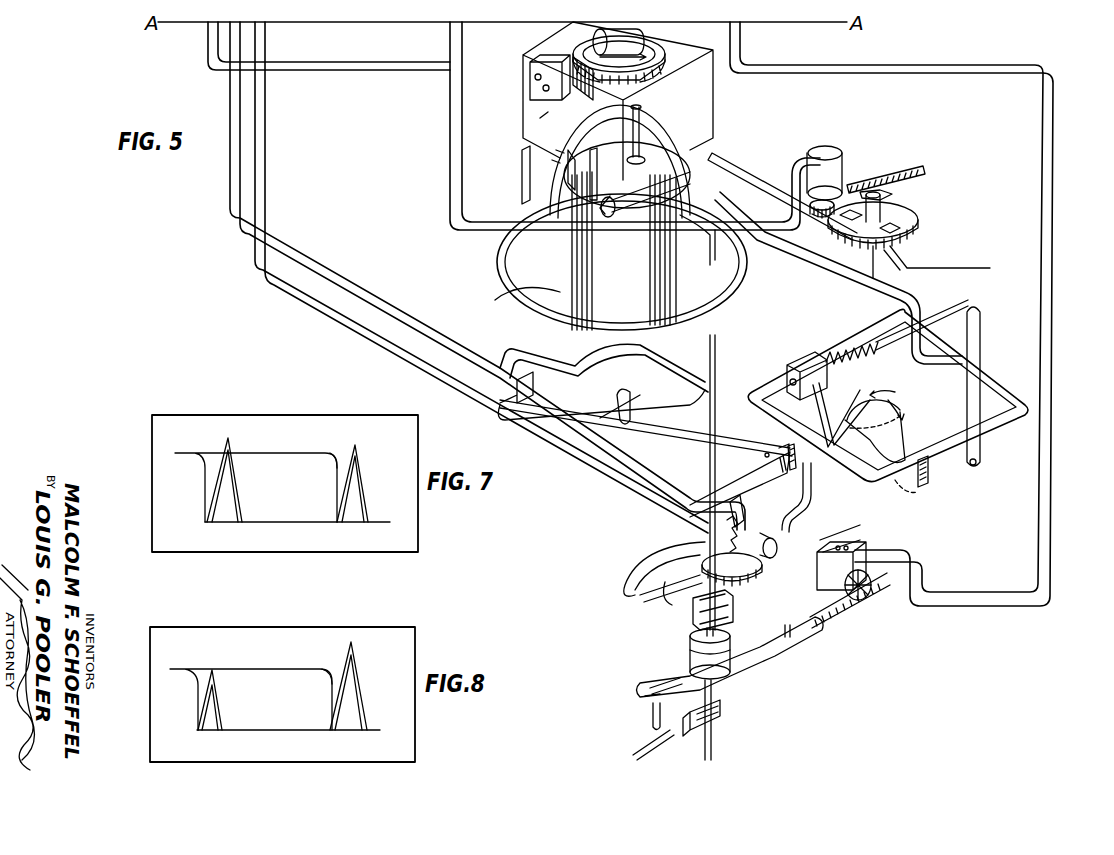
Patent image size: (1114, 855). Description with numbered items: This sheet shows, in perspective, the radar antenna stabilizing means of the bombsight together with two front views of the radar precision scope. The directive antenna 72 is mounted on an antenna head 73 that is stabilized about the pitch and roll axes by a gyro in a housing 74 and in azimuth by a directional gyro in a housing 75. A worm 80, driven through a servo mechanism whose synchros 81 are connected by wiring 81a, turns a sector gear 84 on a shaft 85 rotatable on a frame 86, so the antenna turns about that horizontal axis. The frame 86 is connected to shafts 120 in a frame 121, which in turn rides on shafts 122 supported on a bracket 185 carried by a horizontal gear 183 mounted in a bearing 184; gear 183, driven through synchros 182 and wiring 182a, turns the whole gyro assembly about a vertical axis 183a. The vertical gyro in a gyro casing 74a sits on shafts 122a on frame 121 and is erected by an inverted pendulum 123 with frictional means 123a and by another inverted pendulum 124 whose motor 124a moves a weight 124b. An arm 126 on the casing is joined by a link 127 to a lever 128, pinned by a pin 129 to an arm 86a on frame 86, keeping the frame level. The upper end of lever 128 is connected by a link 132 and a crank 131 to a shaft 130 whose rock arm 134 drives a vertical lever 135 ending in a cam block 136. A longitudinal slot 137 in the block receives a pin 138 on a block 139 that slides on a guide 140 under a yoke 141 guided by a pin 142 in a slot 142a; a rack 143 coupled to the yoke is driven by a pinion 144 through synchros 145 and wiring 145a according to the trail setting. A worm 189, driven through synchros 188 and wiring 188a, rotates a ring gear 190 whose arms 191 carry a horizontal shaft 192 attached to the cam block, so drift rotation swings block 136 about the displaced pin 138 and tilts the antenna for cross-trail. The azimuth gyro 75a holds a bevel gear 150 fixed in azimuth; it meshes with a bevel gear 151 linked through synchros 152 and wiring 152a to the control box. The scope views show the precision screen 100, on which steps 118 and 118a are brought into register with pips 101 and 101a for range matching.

In FIG. 5, the azimuth gyro 75a is at (596, 35).
In FIG. 5, the wiring 152a is at (404, 70).
In FIG. 5, the synchros 152 is at (530, 80).
In FIG. 5, the bevel gear 150 is at (650, 60).
In FIG. 5, the wiring 145a is at (850, 72).
In FIG. 5, the wiring 81a is at (265, 114).
In FIG. 5, the bevel gear 151 is at (583, 96).
In FIG. 5, the frictional means 123a is at (641, 108).
In FIG. 5, the wiring 182a is at (450, 135).
In FIG. 5, the housing 75 is at (540, 118).
In FIG. 5, the inverted pendulum 124 is at (553, 162).
In FIG. 5, the inverted pendulum 123 is at (556, 172).
In FIG. 5, the shafts 122 is at (520, 198).
In FIG. 5, the bracket 185 is at (722, 160).
In FIG. 5, the synchros 182 is at (840, 152).
In FIG. 5, the housing 74 is at (925, 169).
In FIG. 5, the bearing 184 is at (893, 194).
In FIG. 5, the horizontal gear 183 is at (900, 218).
In FIG. 5, the weight 124b is at (662, 200).
In FIG. 5, the motor 124a is at (700, 212).
In FIG. 5, the vertical axis 183a is at (885, 258).
In FIG. 5, the wiring 188a is at (358, 276).
In FIG. 5, the gyro casing 74a is at (500, 276).
In FIG. 5, the frame 121 is at (493, 300).
In FIG. 5, the shafts 122a is at (500, 303).
In FIG. 5, the arm 126 is at (575, 348).
In FIG. 5, the frame 86 is at (982, 306).
In FIG. 5, the shafts 120 is at (1015, 350).
In FIG. 5, the synchros 81 is at (800, 360).
In FIG. 5, the worm 80 is at (850, 350).
In FIG. 5, the synchros 188 is at (716, 490).
In FIG. 5, the sector gear 84 is at (830, 450).
In FIG. 5, the arm 86a is at (795, 512).
In FIG. 5, the lever 128 is at (772, 512).
In FIG. 5, the pin 129 is at (778, 545).
In FIG. 5, the worm 189 is at (832, 558).
In FIG. 5, the crank 131 is at (690, 360).
In FIG. 5, the rock arm 134 is at (630, 425).
In FIG. 5, the shaft 130 is at (660, 405).
In FIG. 5, the link 127 is at (700, 440).
In FIG. 5, the vertical lever 135 is at (722, 468).
In FIG. 5, the link 132 is at (742, 482).
In FIG. 5, the ring gear 190 is at (700, 540).
In FIG. 5, the arms 191 is at (628, 588).
In FIG. 5, the horizontal shaft 192 is at (665, 600).
In FIG. 5, the longitudinal slot 137 is at (745, 600).
In FIG. 5, the cam block 136 is at (740, 616).
In FIG. 5, the pin 138 is at (705, 632).
In FIG. 5, the block 139 is at (693, 650).
In FIG. 5, the yoke 141 is at (672, 665).
In FIG. 5, the slot 142a is at (645, 692).
In FIG. 5, the pin 142 is at (652, 712).
In FIG. 5, the guide 140 is at (660, 730).
In FIG. 5, the synchros 145 is at (812, 620).
In FIG. 5, the rack 143 is at (838, 592).
In FIG. 5, the pinion 144 is at (862, 602).
In FIG. 5, the directive antenna 72 is at (963, 468).
In FIG. 5, the shaft 85 is at (950, 492).
In FIG. 5, the antenna head 73 is at (940, 503).
In FIG. 7, the precision screen 100 is at (163, 530).
In FIG. 8, the precision screen 100 is at (160, 640).
In FIG. 7, the step 118 is at (205, 490).
In FIG. 8, the step 118 is at (200, 700).
In FIG. 7, the pip 101 is at (236, 490).
In FIG. 8, the pip 101 is at (215, 700).
In FIG. 7, the step 118a is at (335, 490).
In FIG. 8, the step 118a is at (328, 690).
In FIG. 7, the pip 101a is at (360, 490).
In FIG. 8, the pip 101a is at (355, 700).